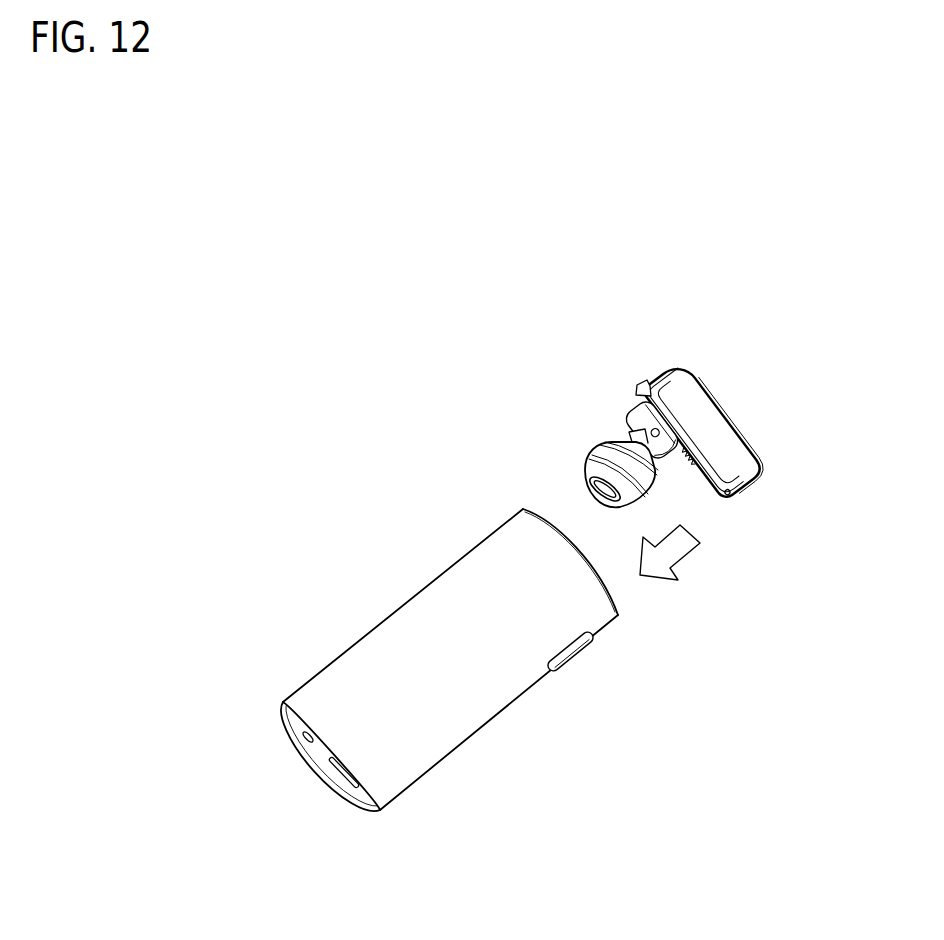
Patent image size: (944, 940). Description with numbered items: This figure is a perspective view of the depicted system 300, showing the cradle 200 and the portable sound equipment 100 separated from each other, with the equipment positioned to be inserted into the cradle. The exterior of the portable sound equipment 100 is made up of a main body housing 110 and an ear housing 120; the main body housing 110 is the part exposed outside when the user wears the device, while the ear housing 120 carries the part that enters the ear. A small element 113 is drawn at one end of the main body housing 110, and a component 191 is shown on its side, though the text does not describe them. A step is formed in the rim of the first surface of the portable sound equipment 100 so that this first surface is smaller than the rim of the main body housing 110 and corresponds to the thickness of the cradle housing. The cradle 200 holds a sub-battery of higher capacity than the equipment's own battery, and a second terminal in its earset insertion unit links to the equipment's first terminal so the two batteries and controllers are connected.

The wireless earbud system 300 is at (239, 257).
The portable sound equipment 100 is at (709, 351).
The main body housing 110 is at (718, 419).
The bracket 113 is at (646, 382).
The ear housing 120 is at (634, 432).
The spring 191 is at (689, 466).
The cradle 200 is at (320, 752).